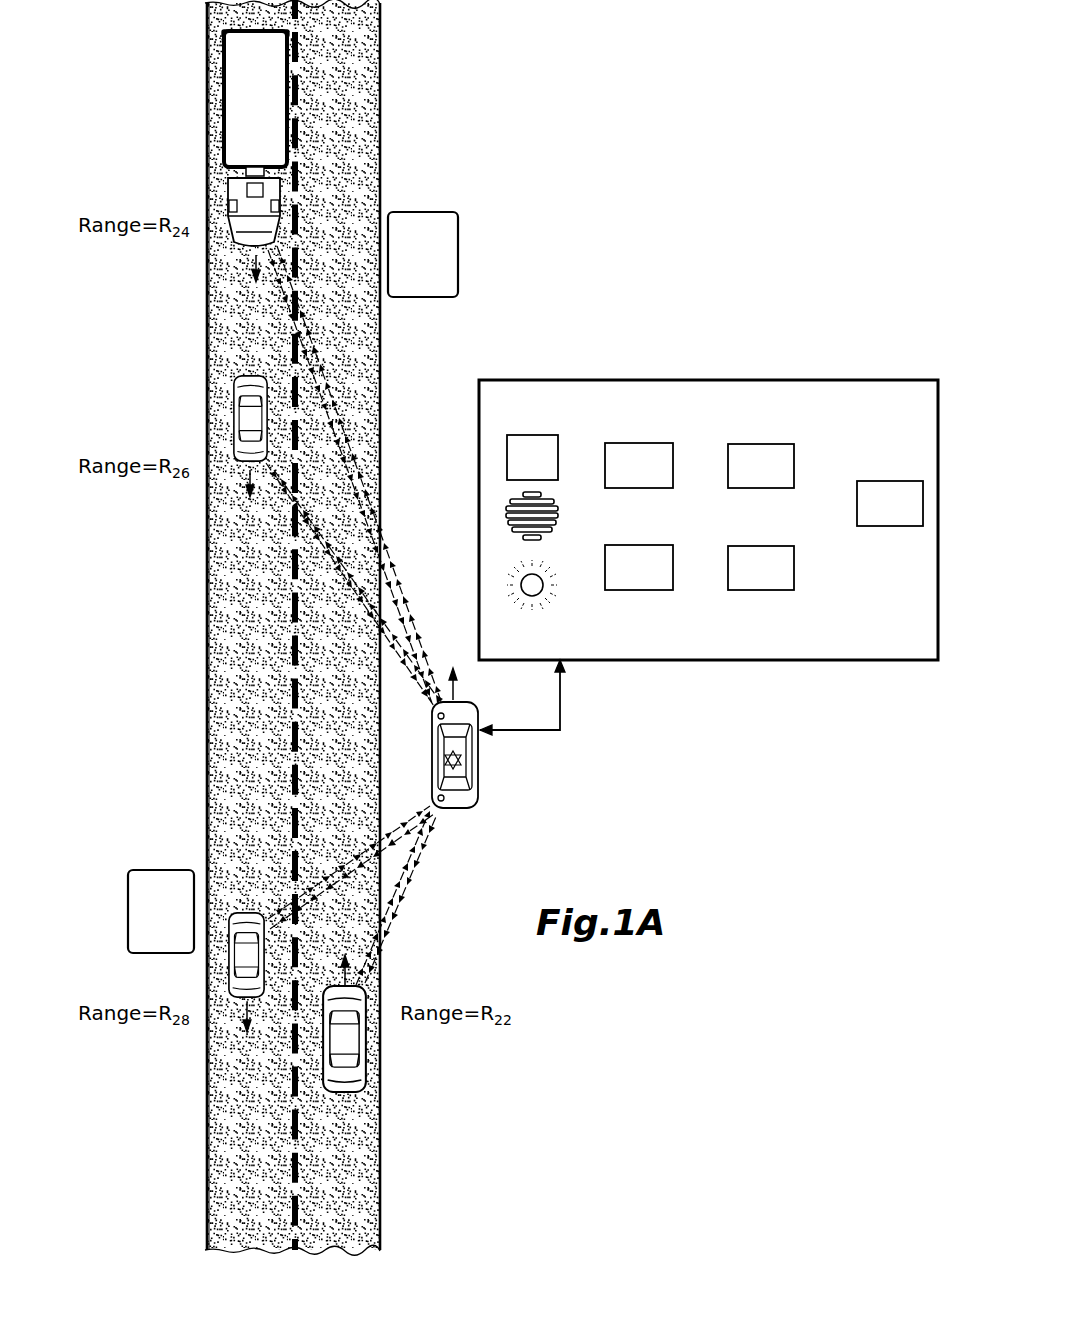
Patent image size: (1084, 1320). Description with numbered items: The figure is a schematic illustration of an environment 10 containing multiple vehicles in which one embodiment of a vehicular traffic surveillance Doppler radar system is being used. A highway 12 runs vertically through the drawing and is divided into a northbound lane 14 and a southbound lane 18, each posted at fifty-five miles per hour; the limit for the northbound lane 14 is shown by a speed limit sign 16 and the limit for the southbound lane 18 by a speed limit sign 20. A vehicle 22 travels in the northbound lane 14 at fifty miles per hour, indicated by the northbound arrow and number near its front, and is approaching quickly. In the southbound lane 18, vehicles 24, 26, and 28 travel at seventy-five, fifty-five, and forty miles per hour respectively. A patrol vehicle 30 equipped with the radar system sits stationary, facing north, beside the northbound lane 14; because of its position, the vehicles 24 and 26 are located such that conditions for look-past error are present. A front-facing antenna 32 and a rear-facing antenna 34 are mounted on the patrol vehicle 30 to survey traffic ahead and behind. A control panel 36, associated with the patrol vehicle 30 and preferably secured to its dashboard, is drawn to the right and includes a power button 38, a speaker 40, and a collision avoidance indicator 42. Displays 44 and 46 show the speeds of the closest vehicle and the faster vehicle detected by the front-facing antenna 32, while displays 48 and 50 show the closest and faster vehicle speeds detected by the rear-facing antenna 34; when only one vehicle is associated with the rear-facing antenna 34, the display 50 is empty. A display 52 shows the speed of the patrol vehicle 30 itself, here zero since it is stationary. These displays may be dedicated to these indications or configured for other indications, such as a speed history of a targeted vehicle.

The environment 10 is at (693, 213).
The highway 12 is at (382, 58).
The northbound lane 14 is at (324, 625).
The speed limit sign 16 is at (458, 247).
The southbound lane 18 is at (238, 626).
The speed limit sign 20 is at (155, 870).
The vehicle 22 is at (380, 1048).
The vehicle 24 is at (224, 94).
The vehicle 26 is at (233, 420).
The vehicle 28 is at (235, 963).
The patrol vehicle 30 is at (476, 734).
The front-facing antenna 32 is at (438, 716).
The rear-facing antenna 34 is at (438, 798).
The control panel 36 is at (731, 380).
The power button 38 is at (507, 458).
The speaker 40 is at (507, 517).
The collision avoidance indicator 42 is at (519, 585).
The display 44 is at (648, 488).
The display 46 is at (770, 488).
The display 48 is at (648, 545).
The display 50 is at (766, 546).
The display 52 is at (875, 481).